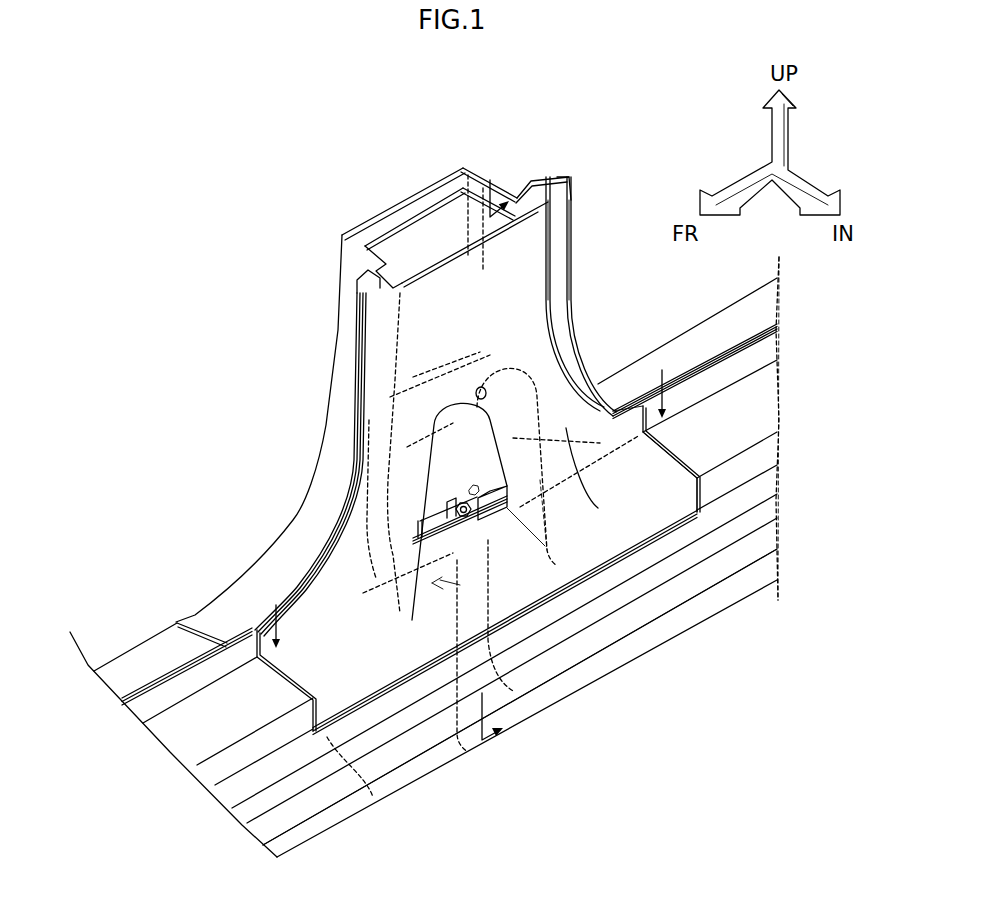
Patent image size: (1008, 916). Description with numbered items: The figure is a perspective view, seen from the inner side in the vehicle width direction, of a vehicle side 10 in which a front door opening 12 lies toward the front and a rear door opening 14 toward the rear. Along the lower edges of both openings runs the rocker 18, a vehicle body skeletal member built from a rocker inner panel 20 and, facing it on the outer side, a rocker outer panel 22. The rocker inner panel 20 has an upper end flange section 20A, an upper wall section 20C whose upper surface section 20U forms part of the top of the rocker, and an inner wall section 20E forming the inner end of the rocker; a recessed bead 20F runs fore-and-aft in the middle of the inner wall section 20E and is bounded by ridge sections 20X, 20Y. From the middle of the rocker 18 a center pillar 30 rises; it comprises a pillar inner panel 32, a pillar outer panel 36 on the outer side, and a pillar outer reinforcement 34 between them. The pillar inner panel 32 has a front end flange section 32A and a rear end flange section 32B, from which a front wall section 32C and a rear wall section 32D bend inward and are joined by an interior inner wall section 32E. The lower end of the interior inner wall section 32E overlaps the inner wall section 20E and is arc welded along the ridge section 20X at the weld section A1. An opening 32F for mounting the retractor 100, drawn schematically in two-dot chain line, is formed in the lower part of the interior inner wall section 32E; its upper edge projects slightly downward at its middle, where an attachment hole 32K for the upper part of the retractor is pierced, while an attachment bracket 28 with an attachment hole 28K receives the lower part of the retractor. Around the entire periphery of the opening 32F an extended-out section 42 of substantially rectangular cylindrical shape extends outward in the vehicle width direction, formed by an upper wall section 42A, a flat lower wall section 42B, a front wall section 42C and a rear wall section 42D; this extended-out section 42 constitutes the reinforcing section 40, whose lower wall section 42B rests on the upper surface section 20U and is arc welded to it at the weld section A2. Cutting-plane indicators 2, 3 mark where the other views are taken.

The vehicle side 10 is at (604, 135).
The front door opening 12 is at (180, 665).
The rear door opening 14 is at (727, 350).
The rocker 18 is at (113, 633).
The rocker inner panel 20 is at (590, 640).
The upper surface section 20U is at (760, 360).
The upper wall section 20C is at (743, 418).
The upper end flange section 20A is at (677, 410).
The ridge section 20X is at (735, 482).
The recessed bead 20F is at (722, 512).
The ridge section 20Y is at (727, 547).
The inner wall section 20E is at (655, 595).
The rocker outer panel 22 is at (112, 663).
The attachment bracket 28 is at (545, 546).
The attachment hole 28K is at (480, 548).
The center pillar 30 is at (587, 238).
The pillar inner panel 32 is at (533, 277).
The front end flange section 32A is at (343, 506).
The rear end flange section 32B is at (572, 358).
The front wall section 32C is at (397, 337).
The rear wall section 32D is at (570, 190).
The interior inner wall section 32E is at (562, 310).
The opening 32F is at (635, 489).
The attachment hole 32K is at (486, 386).
The pillar outer reinforcement 34 is at (427, 195).
The pillar outer panel 36 is at (376, 192).
The reinforcing section 40 is at (472, 673).
The extended-out section 42 is at (512, 714).
The upper wall section 42A is at (462, 352).
The lower wall section 42B is at (515, 692).
The front wall section 42C is at (400, 613).
The rear wall section 42D is at (578, 442).
The retractor 100 is at (598, 508).
The section line 2 is at (268, 606).
The section line 3 is at (490, 180).
The arc welding section A1 is at (356, 782).
The arc welding section A2 is at (460, 585).